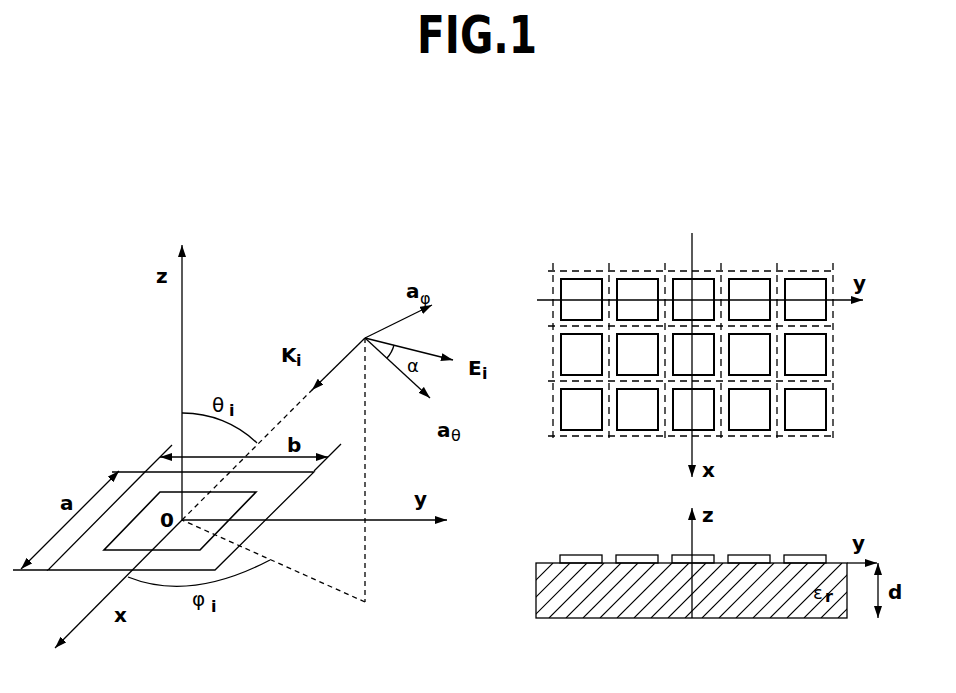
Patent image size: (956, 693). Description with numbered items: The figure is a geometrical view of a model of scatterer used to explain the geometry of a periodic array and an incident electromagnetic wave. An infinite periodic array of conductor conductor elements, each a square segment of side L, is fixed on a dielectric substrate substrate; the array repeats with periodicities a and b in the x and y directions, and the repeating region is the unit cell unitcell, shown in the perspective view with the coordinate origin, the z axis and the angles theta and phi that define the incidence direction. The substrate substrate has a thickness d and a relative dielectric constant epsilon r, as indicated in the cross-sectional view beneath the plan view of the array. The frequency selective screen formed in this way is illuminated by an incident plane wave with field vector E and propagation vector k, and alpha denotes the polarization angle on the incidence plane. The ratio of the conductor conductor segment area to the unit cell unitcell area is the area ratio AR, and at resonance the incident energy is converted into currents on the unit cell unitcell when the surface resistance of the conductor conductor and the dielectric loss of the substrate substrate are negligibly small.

The element conductor is at (580, 555).
The dielectric substrate is at (748, 587).
The unit cell unitcell is at (181, 492).